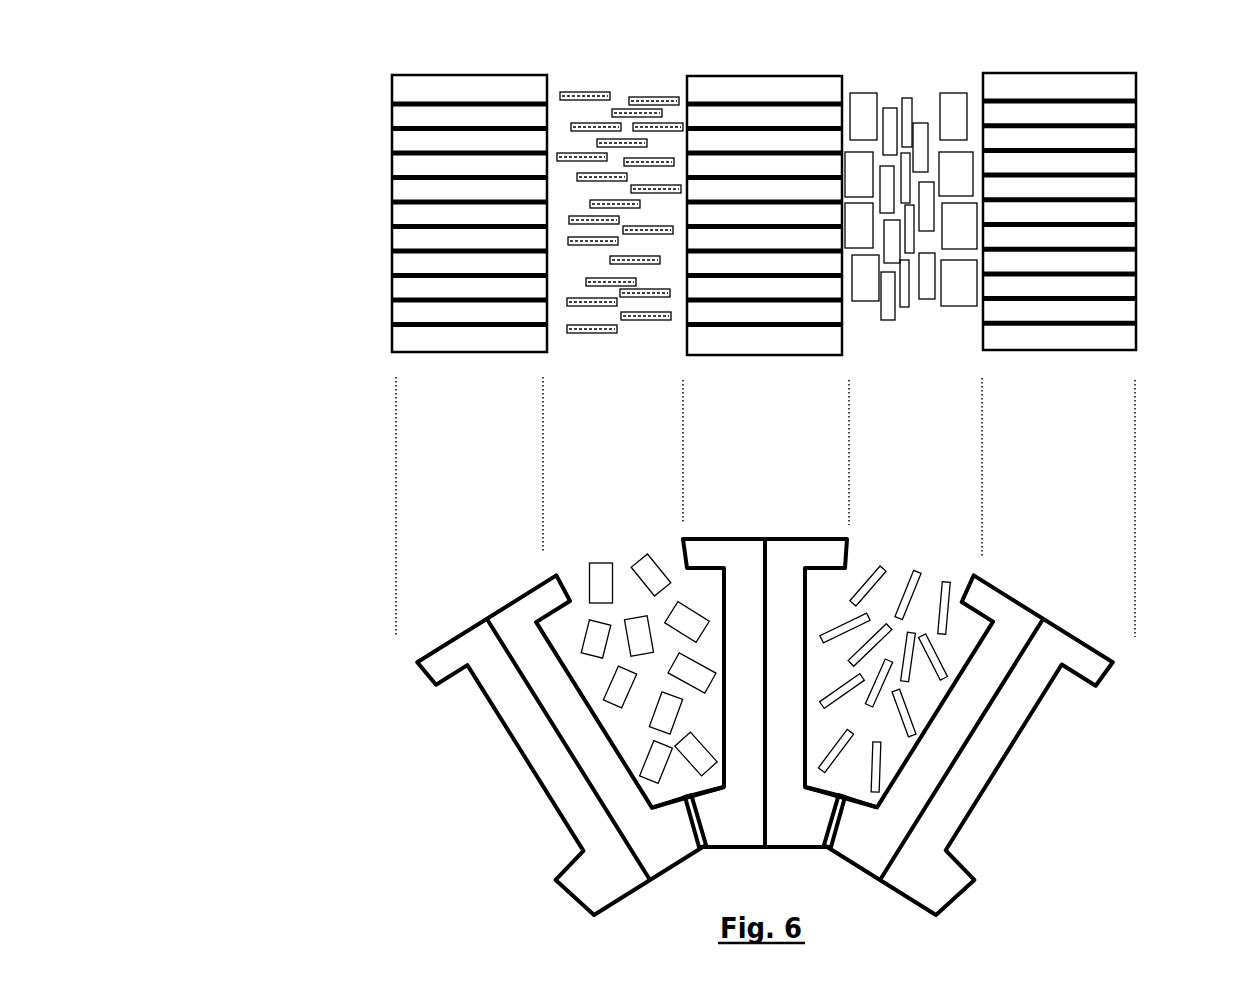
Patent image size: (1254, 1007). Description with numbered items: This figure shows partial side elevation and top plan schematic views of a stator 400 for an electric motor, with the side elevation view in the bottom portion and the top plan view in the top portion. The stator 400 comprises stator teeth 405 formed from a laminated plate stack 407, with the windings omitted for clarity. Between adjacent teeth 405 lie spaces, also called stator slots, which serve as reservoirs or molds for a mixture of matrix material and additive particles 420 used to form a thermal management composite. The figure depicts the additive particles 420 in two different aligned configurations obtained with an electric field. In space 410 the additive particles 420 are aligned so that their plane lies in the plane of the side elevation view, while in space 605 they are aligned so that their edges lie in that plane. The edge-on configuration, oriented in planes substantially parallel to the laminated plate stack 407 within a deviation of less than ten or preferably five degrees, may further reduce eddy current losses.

The stator 400 is at (233, 199).
The stator teeth 405 is at (799, 498).
The laminated plate stack 407 is at (1125, 117).
The space 410 is at (583, 83).
The additive particles 420 is at (590, 333).
The space 605 is at (898, 83).